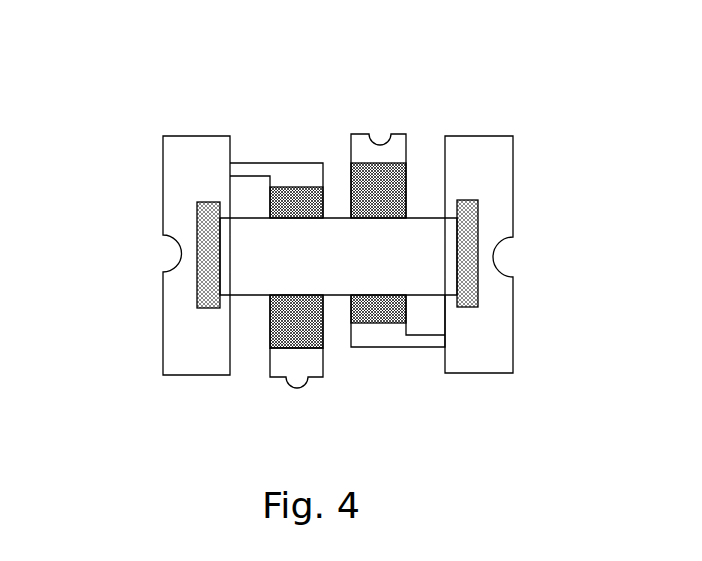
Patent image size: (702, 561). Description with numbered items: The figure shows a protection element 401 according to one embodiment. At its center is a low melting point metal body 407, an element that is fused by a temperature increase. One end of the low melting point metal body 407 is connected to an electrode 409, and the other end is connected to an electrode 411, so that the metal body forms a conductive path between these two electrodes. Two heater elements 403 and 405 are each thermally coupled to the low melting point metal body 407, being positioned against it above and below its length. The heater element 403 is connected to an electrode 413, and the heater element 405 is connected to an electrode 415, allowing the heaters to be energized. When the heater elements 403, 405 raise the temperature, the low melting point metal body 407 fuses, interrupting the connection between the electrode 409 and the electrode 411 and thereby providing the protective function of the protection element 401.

The protection element 401 is at (149, 72).
The heater element 403 is at (296, 210).
The heater element 405 is at (402, 178).
The low melting point metal body 407 is at (363, 269).
The electrode 409 is at (177, 205).
The electrode 411 is at (503, 225).
The electrode 413 is at (282, 367).
The electrode 415 is at (363, 145).